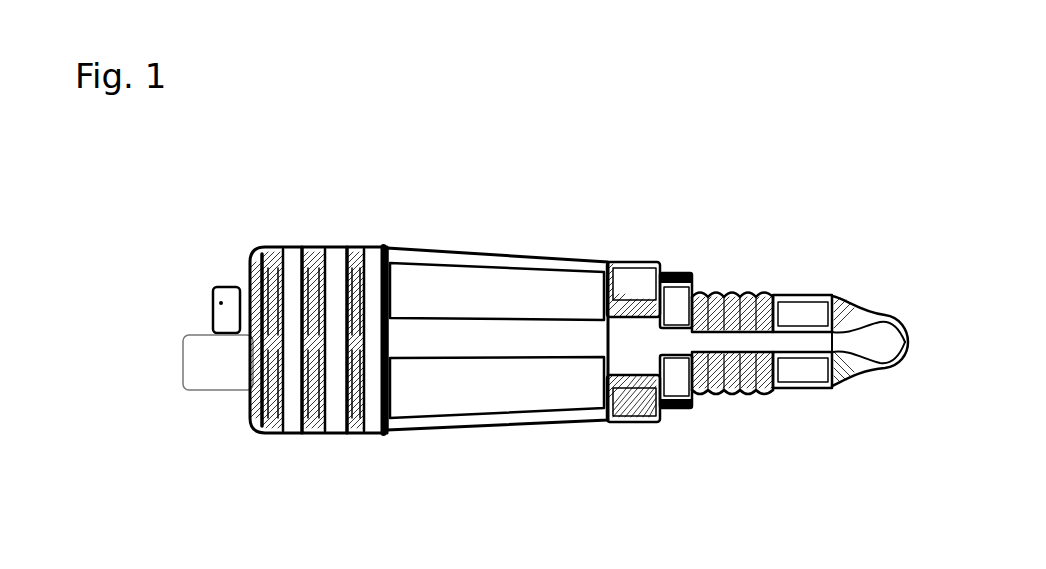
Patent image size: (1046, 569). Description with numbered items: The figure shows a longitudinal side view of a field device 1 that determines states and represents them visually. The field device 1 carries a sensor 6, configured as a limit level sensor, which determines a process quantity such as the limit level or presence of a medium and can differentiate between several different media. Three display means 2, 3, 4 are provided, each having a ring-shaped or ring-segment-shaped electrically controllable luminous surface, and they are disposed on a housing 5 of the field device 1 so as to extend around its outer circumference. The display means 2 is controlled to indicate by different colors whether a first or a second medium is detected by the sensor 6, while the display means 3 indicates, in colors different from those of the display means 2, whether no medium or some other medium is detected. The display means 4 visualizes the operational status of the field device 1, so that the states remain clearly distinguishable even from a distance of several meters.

The field device 1 is at (630, 165).
The display means 2 is at (372, 248).
The display means 3 is at (332, 422).
The display means 4 is at (298, 248).
The housing 5 is at (465, 250).
The sensor 6 is at (877, 320).